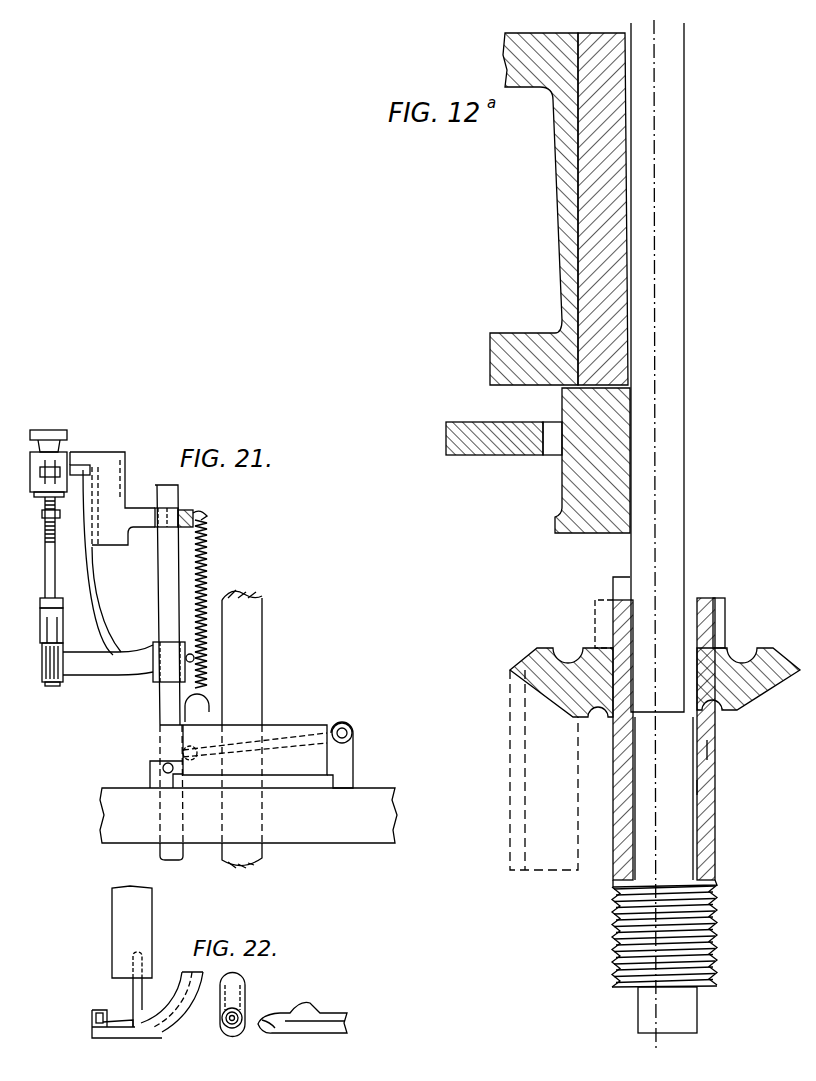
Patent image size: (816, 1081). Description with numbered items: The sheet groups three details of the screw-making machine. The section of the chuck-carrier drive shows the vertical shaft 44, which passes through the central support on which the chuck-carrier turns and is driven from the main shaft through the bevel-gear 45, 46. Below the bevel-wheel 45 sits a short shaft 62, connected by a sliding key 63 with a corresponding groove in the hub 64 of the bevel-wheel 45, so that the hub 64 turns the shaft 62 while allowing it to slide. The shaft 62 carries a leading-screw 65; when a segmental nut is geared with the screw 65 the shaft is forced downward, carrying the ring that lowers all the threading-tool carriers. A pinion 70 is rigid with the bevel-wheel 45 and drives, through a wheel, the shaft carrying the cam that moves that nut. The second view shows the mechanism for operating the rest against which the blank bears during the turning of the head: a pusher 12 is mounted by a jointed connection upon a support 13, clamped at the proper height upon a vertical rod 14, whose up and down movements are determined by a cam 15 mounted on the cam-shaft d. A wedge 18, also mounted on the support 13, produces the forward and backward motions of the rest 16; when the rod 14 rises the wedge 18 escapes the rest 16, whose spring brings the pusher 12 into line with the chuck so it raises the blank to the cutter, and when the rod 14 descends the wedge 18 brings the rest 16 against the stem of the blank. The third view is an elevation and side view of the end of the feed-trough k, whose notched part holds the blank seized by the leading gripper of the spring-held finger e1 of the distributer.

In FIG. 12A, the vertical shaft 44 is at (688, 331).
In FIG. 12A, the bevel-wheel 45 is at (582, 690).
In FIG. 12A, the bevel-gear 46 is at (533, 815).
In FIG. 12A, the short shaft 62 is at (652, 793).
In FIG. 12A, the sliding key 63 is at (698, 788).
In FIG. 12A, the hub 64 is at (708, 749).
In FIG. 12A, the leading-screw 65 is at (693, 928).
In FIG. 12A, the pinion 70 is at (705, 612).
In FIG. 21, the pusher 12 is at (52, 561).
In FIG. 21, the support 13 is at (97, 665).
In FIG. 21, the vertical rod 14 is at (158, 584).
In FIG. 21, the cam 15 is at (297, 753).
In FIG. 21, the rest 16 is at (58, 432).
In FIG. 21, the wedge 18 is at (81, 467).
In FIG. 21, the cam-shaft d is at (253, 664).
In FIG. 22, the feed-trough k is at (165, 1022).
In FIG. 22, the finger e1 is at (313, 1020).